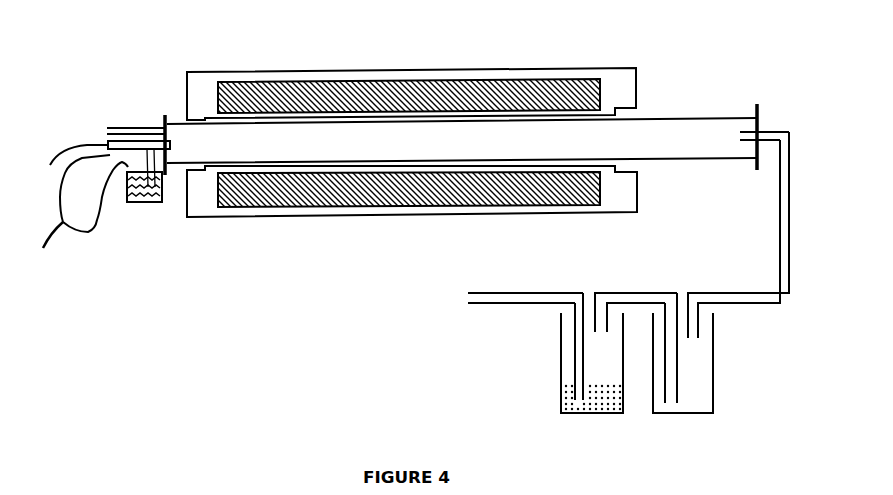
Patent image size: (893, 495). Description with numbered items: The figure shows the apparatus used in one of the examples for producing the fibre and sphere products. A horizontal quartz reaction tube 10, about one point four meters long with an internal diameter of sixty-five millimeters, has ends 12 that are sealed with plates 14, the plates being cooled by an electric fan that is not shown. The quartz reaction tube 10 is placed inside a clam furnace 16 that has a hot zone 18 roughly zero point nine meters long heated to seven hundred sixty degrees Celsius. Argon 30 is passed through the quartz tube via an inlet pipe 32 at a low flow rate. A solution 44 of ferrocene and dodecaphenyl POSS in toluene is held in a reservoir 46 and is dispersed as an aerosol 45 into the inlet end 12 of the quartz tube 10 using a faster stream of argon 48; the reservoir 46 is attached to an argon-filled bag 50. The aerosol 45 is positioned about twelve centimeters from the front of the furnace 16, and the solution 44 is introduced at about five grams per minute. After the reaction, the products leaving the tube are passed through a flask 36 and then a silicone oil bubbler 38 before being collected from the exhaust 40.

The quartz reaction tube 10 is at (690, 165).
The ends 12 is at (160, 97).
The plates 14 is at (172, 118).
The clam furnace 16 is at (308, 222).
The hot zone 18 is at (388, 192).
The argon 30 is at (97, 131).
The inlet pipe 32 is at (125, 120).
The flask 36 is at (680, 416).
The silicone oil bubbler 38 is at (598, 416).
The exhaust 40 is at (468, 295).
The solution 44 is at (163, 200).
The aerosol 45 is at (172, 143).
The reservoir 46 is at (136, 210).
The argon 48 is at (64, 166).
The argon-filled bag 50 is at (70, 219).